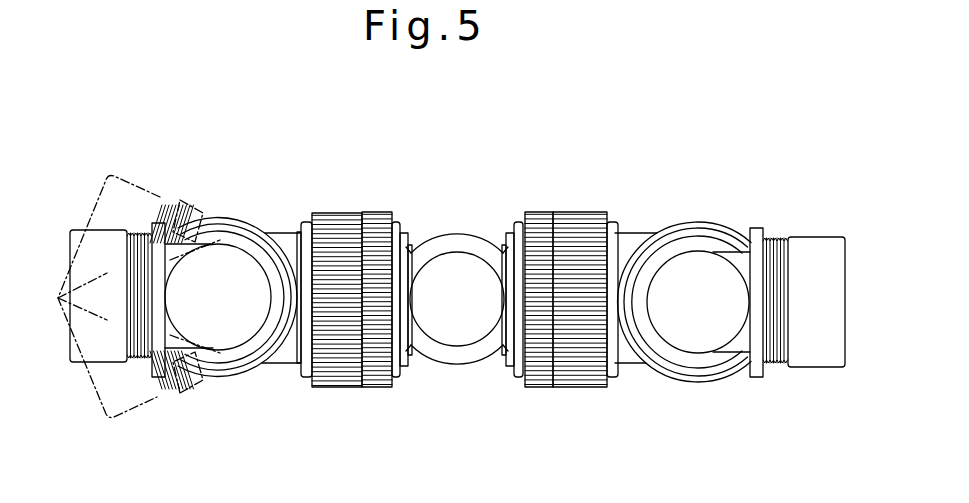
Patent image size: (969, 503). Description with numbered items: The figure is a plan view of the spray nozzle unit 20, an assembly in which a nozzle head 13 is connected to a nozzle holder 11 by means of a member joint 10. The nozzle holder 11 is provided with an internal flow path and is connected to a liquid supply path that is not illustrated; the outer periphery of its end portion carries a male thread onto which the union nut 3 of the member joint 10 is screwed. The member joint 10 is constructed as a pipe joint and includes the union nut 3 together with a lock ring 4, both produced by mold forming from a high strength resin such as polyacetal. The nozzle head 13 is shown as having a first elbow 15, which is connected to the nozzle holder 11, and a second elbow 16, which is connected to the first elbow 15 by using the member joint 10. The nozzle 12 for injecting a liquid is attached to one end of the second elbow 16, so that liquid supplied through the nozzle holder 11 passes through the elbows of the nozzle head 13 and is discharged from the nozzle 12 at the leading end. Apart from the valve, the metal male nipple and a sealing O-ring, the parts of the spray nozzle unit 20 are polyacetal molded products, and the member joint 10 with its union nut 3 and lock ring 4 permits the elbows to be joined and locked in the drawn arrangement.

The union nut 3 is at (333, 220).
The lock ring 4 is at (380, 220).
The member joint 10 is at (455, 300).
The nozzle holder 11 is at (463, 335).
The nozzle 12 is at (80, 230).
The nozzle head 13 is at (228, 218).
The first elbow 15 is at (292, 353).
The second elbow 16 is at (203, 313).
The spray nozzle unit 20 is at (482, 192).